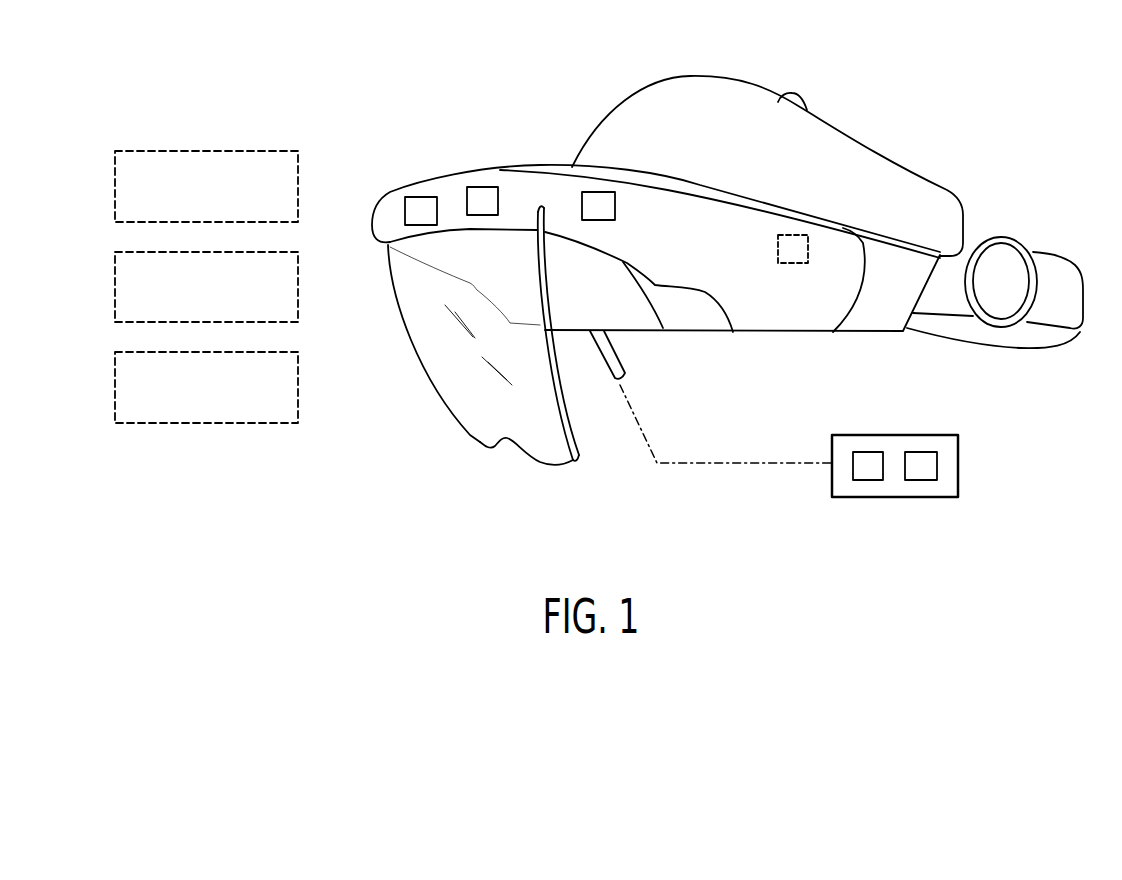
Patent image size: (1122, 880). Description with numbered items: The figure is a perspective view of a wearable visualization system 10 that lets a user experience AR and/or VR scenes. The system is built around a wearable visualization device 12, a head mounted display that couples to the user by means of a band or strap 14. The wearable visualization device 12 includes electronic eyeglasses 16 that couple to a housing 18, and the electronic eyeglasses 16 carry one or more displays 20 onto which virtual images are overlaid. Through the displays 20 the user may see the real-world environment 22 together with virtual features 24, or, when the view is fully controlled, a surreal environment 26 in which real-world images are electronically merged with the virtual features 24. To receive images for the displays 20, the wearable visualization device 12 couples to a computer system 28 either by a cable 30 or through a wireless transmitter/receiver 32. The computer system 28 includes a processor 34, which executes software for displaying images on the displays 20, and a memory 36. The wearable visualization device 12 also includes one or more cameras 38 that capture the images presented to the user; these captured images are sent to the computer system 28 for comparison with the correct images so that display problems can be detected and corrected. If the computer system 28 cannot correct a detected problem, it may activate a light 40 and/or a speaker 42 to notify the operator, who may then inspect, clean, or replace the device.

The wearable visualization system 10 is at (893, 61).
The wearable visualization device 12 is at (447, 166).
The band or strap 14 is at (908, 338).
The electronic eyeglasses 16 is at (404, 366).
The housing 18 is at (505, 168).
The displays 20 is at (480, 438).
The real-world environment 22 is at (117, 182).
The virtual features 24 is at (117, 282).
The surreal environment 26 is at (117, 382).
The computer system 28 is at (930, 490).
The cable 30 is at (618, 352).
The wireless transmitter/receiver 32 is at (582, 203).
The processor 34 is at (867, 480).
The memory 36 is at (922, 480).
The cameras 38 is at (797, 232).
The light 40 is at (415, 197).
The speaker 42 is at (480, 187).